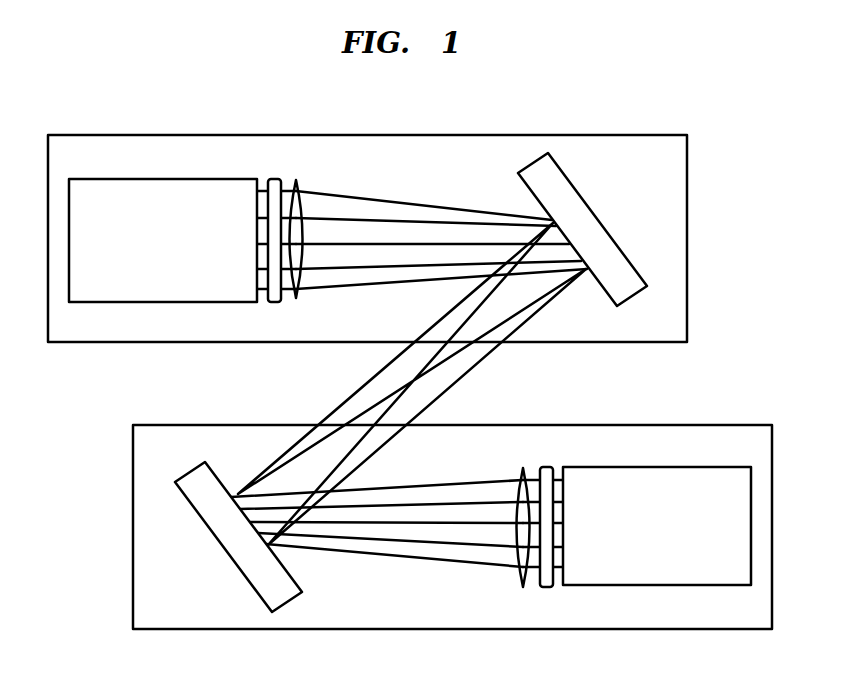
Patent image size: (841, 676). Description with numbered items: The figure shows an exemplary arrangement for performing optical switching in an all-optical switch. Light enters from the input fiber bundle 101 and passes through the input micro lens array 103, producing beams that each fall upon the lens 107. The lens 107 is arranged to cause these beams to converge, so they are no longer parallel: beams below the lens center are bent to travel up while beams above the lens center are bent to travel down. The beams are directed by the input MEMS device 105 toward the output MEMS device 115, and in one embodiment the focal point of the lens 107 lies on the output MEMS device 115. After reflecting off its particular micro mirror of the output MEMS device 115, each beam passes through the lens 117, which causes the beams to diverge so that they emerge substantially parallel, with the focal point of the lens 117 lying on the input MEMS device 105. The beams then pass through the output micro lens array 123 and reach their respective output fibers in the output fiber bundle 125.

The input fiber bundle 101 is at (183, 303).
The input micro lens array 103 is at (274, 303).
The input MEMS device 105 is at (577, 191).
The lens 107 is at (297, 181).
The output MEMS device 115 is at (242, 572).
The lens 117 is at (521, 469).
The output micro lens array 123 is at (547, 588).
The output fiber bundle 125 is at (660, 586).